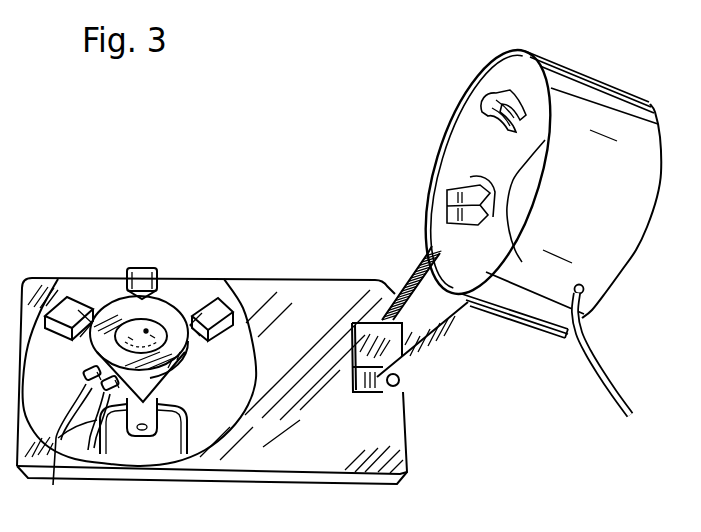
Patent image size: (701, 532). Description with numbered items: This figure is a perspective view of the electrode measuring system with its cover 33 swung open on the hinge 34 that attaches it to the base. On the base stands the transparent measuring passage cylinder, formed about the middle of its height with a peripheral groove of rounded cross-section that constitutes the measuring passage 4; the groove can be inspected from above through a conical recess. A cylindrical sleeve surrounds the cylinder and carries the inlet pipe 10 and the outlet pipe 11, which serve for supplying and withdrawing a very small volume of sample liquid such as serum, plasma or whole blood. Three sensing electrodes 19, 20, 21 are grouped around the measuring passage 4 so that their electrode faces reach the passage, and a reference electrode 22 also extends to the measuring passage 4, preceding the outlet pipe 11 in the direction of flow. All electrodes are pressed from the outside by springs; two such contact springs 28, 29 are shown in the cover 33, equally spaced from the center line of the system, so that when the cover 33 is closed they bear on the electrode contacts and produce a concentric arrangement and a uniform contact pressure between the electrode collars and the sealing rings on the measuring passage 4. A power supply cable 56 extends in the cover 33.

The measuring passage 4 is at (145, 331).
The inlet pipe 10 is at (83, 372).
The outlet pipe 11 is at (78, 452).
The sensing electrode 19 is at (68, 305).
The sensing electrode 20 is at (139, 271).
The sensing electrode 21 is at (230, 298).
The reference electrode 22 is at (153, 402).
The contact spring 28 is at (492, 102).
The contact spring 29 is at (452, 202).
The cover 33 is at (647, 198).
The hinge 34 is at (400, 385).
The power supply cable 56 is at (607, 378).